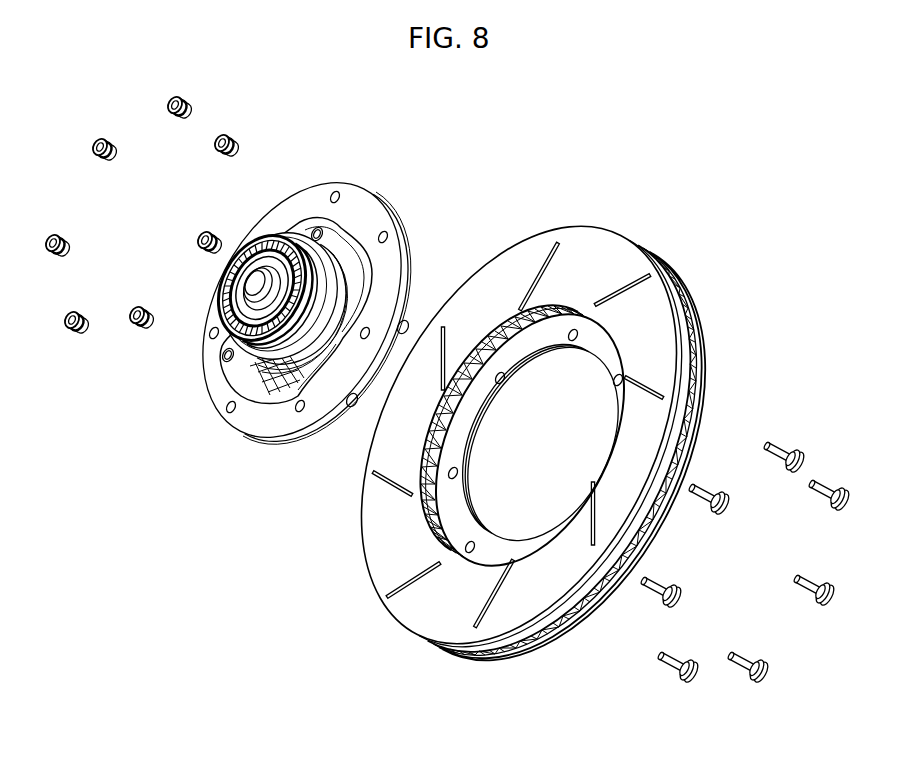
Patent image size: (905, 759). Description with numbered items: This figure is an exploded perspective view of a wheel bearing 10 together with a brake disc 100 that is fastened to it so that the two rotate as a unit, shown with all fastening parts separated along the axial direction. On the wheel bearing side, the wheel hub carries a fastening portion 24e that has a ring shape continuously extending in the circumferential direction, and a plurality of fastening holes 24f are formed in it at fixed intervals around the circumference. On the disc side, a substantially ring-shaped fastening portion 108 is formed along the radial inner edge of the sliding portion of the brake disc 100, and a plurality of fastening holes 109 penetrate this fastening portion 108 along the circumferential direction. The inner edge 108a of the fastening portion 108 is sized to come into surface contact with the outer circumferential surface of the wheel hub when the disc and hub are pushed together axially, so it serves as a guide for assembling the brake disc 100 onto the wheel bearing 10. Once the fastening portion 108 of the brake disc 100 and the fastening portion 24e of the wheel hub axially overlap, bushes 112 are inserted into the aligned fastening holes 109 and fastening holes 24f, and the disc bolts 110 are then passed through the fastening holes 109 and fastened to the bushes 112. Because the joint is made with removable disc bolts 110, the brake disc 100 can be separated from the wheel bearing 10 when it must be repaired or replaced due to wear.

The wheel bearing 10 is at (205, 452).
The fastening portion 24e is at (257, 416).
The fastening holes 24f is at (384, 233).
The brake disc 100 is at (692, 262).
The fastening portion 108 is at (548, 343).
The inner edge 108a is at (490, 437).
The fastening holes 109 is at (408, 576).
The disc bolts 110 is at (819, 485).
The bushes 112 is at (234, 146).